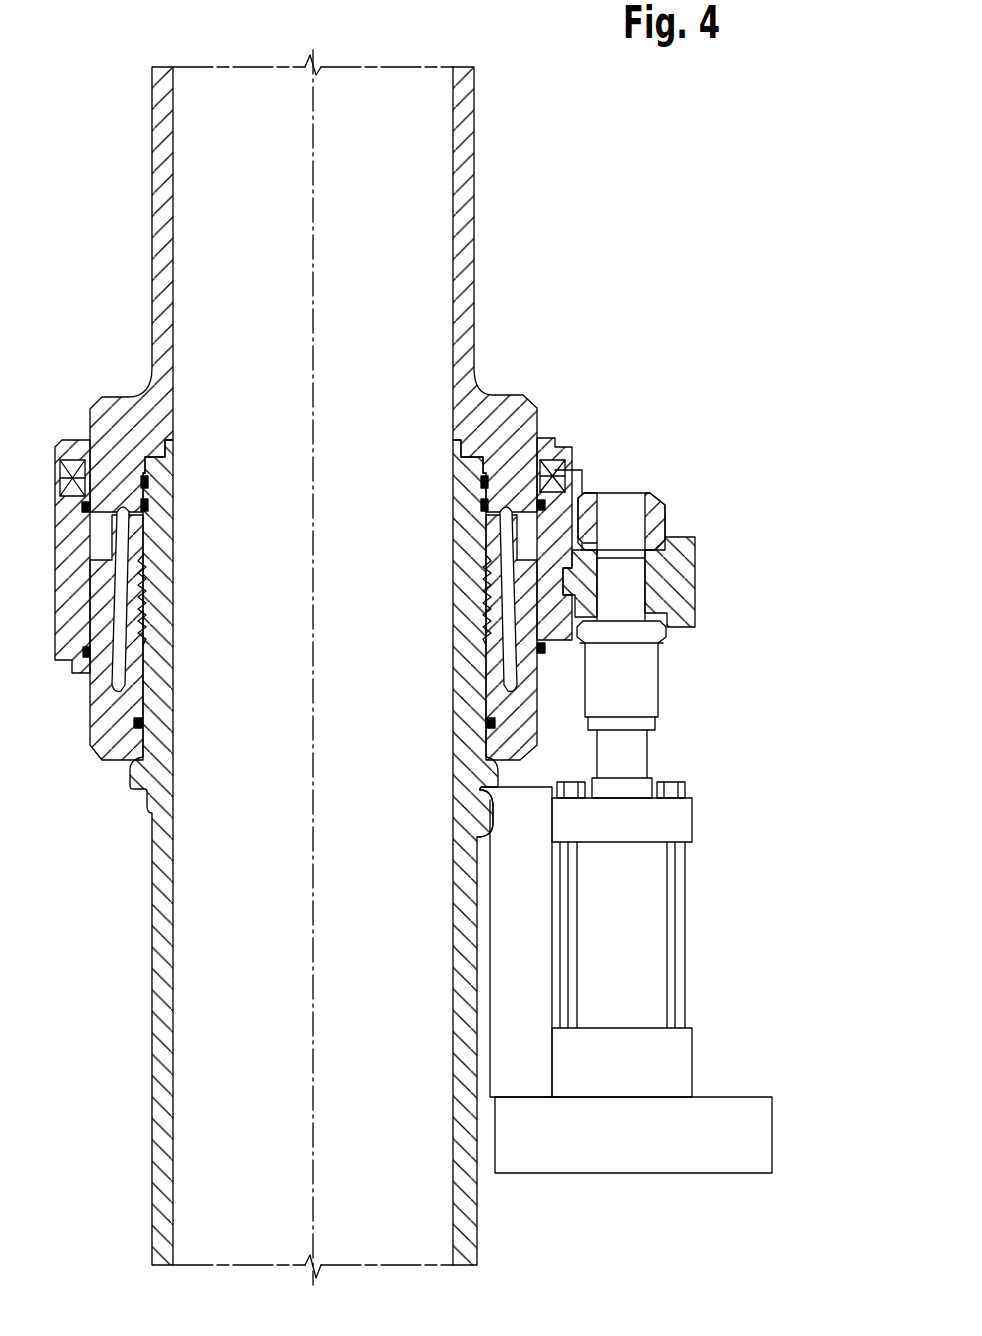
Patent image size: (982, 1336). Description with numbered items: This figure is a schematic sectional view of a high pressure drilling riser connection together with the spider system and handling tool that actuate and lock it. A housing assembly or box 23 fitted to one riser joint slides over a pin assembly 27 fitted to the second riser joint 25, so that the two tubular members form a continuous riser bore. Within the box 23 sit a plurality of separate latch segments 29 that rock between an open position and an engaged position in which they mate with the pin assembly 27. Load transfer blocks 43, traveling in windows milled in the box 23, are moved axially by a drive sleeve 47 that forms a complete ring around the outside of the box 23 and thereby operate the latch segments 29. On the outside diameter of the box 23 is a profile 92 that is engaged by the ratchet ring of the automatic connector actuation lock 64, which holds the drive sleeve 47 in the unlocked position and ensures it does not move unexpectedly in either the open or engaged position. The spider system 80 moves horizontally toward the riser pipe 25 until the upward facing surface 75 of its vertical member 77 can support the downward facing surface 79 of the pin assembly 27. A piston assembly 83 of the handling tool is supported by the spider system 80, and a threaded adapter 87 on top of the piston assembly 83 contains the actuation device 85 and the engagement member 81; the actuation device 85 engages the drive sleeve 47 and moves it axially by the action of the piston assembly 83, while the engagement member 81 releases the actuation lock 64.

The housing assembly 23 is at (468, 415).
The second high pressure drilling riser joint 25 is at (213, 961).
The pin assembly 27 is at (472, 748).
The latch segment 29 is at (497, 644).
The load transfer block 43 is at (508, 592).
The drive sleeve 47 is at (583, 653).
The automatic connector actuation lock 64 is at (603, 784).
The upward facing surface 75 is at (492, 818).
The vertical member 77 is at (512, 940).
The downward facing surface 79 is at (487, 779).
The spider system 80 is at (723, 1118).
The engagement member 81 is at (665, 510).
The piston assembly 83 is at (635, 762).
The actuation device 85 is at (697, 562).
The threaded adapter 87 is at (622, 590).
The profile 92 is at (550, 436).